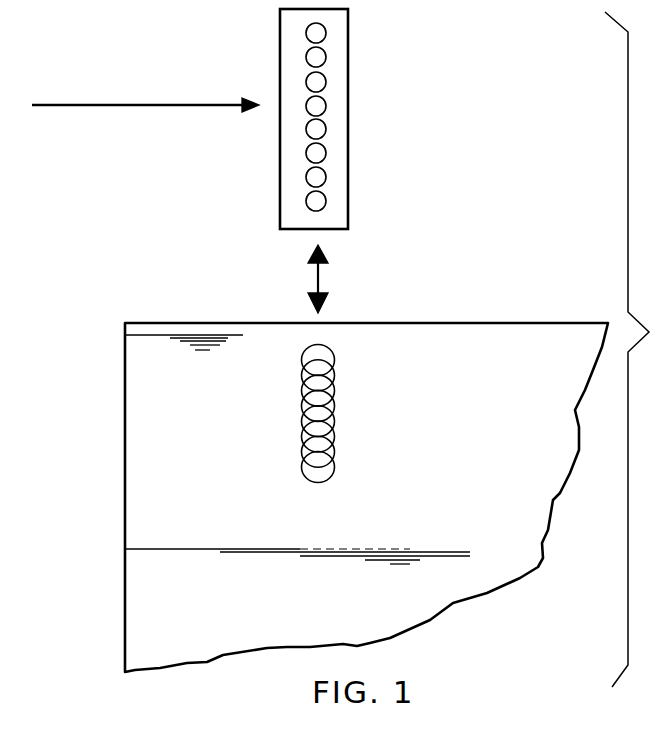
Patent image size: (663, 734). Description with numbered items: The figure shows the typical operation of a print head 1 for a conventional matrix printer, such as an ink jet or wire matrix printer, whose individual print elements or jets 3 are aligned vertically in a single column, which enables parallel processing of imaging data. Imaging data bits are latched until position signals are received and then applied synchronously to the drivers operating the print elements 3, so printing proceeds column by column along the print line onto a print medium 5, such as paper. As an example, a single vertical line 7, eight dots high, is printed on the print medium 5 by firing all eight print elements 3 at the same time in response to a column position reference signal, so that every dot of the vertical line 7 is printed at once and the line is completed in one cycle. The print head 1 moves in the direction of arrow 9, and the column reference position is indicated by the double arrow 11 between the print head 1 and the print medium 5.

The print head 1 is at (348, 37).
The print elements 3 is at (305, 35).
The print medium 5 is at (445, 342).
The vertical line 7 is at (332, 352).
The arrow 9 is at (180, 105).
The double arrow 11 is at (320, 275).